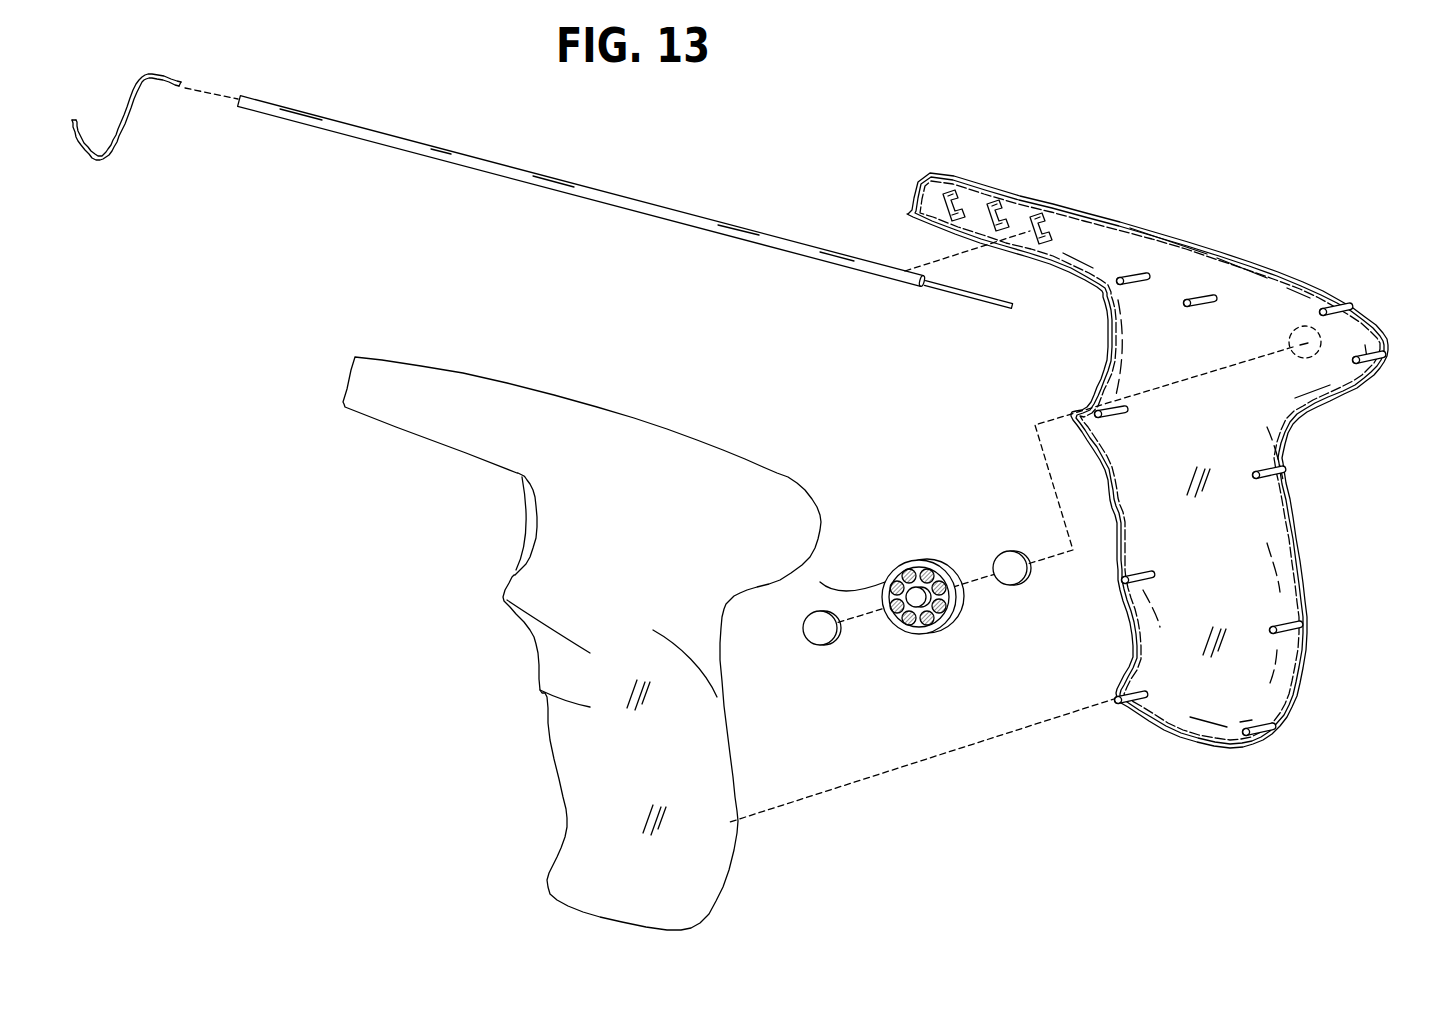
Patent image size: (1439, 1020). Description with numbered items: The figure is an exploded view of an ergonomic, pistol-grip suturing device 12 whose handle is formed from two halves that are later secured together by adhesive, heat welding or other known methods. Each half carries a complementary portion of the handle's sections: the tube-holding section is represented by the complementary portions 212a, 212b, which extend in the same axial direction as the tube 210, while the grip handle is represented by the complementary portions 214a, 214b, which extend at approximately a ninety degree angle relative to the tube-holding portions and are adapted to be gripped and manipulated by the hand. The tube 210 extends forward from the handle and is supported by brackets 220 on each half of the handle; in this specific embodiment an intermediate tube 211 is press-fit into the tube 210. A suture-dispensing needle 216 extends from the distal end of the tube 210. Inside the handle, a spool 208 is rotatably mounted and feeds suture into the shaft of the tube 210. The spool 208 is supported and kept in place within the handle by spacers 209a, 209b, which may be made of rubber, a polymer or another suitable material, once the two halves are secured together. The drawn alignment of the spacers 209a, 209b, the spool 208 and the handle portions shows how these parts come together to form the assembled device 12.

The surgical instrument 12 is at (838, 590).
The spool 208 is at (964, 628).
The spacer 209a is at (844, 636).
The spacer 209b is at (1039, 576).
The tube 210 is at (388, 135).
The intermediate tube 211 is at (967, 297).
The tube-holding section portion 212a is at (440, 412).
The tube-holding section portion 212b is at (1122, 220).
The grip handle portion 214a is at (521, 658).
The grip handle portion 214b is at (1316, 572).
The suture-dispensing needle 216 is at (113, 165).
The brackets 220 is at (970, 188).